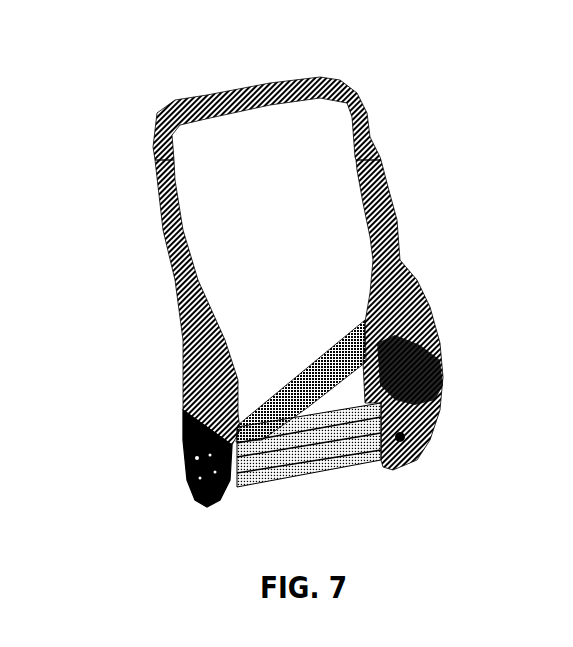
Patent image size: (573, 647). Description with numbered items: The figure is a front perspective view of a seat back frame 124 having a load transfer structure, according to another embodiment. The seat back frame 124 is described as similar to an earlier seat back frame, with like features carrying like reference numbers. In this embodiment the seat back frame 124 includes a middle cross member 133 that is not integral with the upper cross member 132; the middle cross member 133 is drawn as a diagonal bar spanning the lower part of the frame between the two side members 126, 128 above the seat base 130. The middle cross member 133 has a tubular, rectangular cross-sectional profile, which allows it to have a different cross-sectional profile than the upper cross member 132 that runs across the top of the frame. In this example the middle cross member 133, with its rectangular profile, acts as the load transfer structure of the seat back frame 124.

The seat back frame 124 is at (89, 78).
The left side frame member 126 is at (183, 340).
The right side frame member 128 is at (413, 288).
The seat base 130 is at (330, 460).
The upper cross member 132 is at (242, 93).
The middle cross member 133 is at (320, 363).